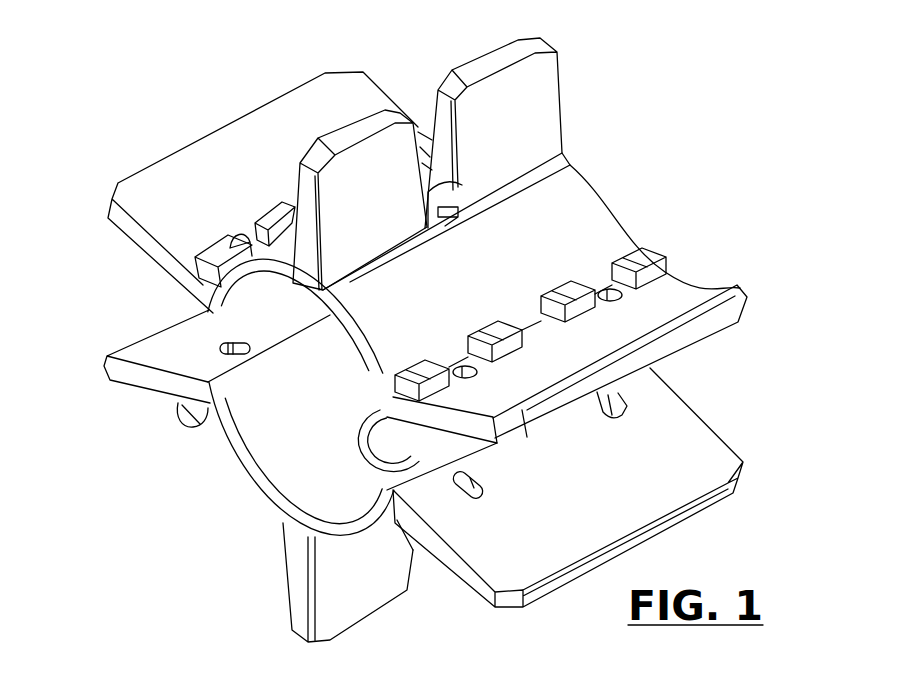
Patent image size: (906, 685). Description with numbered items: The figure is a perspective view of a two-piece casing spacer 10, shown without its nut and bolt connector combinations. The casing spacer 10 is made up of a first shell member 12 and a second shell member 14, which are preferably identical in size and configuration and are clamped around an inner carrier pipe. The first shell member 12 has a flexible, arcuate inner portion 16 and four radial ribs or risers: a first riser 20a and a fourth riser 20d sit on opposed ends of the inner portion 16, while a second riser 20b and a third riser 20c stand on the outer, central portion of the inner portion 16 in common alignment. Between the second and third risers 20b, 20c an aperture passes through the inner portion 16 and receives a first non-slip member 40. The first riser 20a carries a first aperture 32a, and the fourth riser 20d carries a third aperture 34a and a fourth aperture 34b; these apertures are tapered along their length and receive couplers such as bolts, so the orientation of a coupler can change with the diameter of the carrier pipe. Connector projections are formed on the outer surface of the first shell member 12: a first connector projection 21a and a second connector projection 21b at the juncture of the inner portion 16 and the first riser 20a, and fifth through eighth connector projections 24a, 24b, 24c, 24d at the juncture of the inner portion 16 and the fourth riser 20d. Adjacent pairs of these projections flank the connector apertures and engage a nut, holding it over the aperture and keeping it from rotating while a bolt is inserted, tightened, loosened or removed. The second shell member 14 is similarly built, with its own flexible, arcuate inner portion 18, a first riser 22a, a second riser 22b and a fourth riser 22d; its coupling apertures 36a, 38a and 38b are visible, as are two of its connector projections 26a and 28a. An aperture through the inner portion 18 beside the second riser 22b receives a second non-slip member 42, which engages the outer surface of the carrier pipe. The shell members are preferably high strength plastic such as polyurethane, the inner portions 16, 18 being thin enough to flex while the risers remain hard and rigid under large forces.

The casing spacer 10 is at (396, 326).
The first shell member 12 is at (396, 345).
The second shell member 14 is at (293, 430).
The flexible, arcuate inner portion 16 is at (523, 250).
The flexible, arcuate inner portion 18 is at (308, 444).
The first riser 20a is at (298, 152).
The second riser 20b is at (395, 212).
The third riser 20c is at (537, 134).
The fourth riser 20d is at (600, 362).
The first connector projection 21a is at (217, 258).
The second connector projection 21b is at (282, 220).
The first riser 22a is at (202, 362).
The second riser 22b is at (380, 597).
The fourth riser 22d is at (613, 497).
The fifth connector projection 24a is at (427, 375).
The sixth connector projection 24b is at (495, 337).
The seventh connector projection 24c is at (562, 292).
The eighth connector projection 24d is at (653, 262).
The connector projection 26a is at (190, 418).
The connector projection 28a is at (413, 547).
The first aperture 32a is at (240, 245).
The third aperture 34a is at (455, 368).
The fourth aperture 34b is at (607, 294).
The coupling aperture 36a is at (240, 345).
The coupling aperture 38a is at (473, 497).
The coupling aperture 38b is at (627, 413).
The first non-slip member 40 is at (437, 205).
The second non-slip member 42 is at (430, 458).